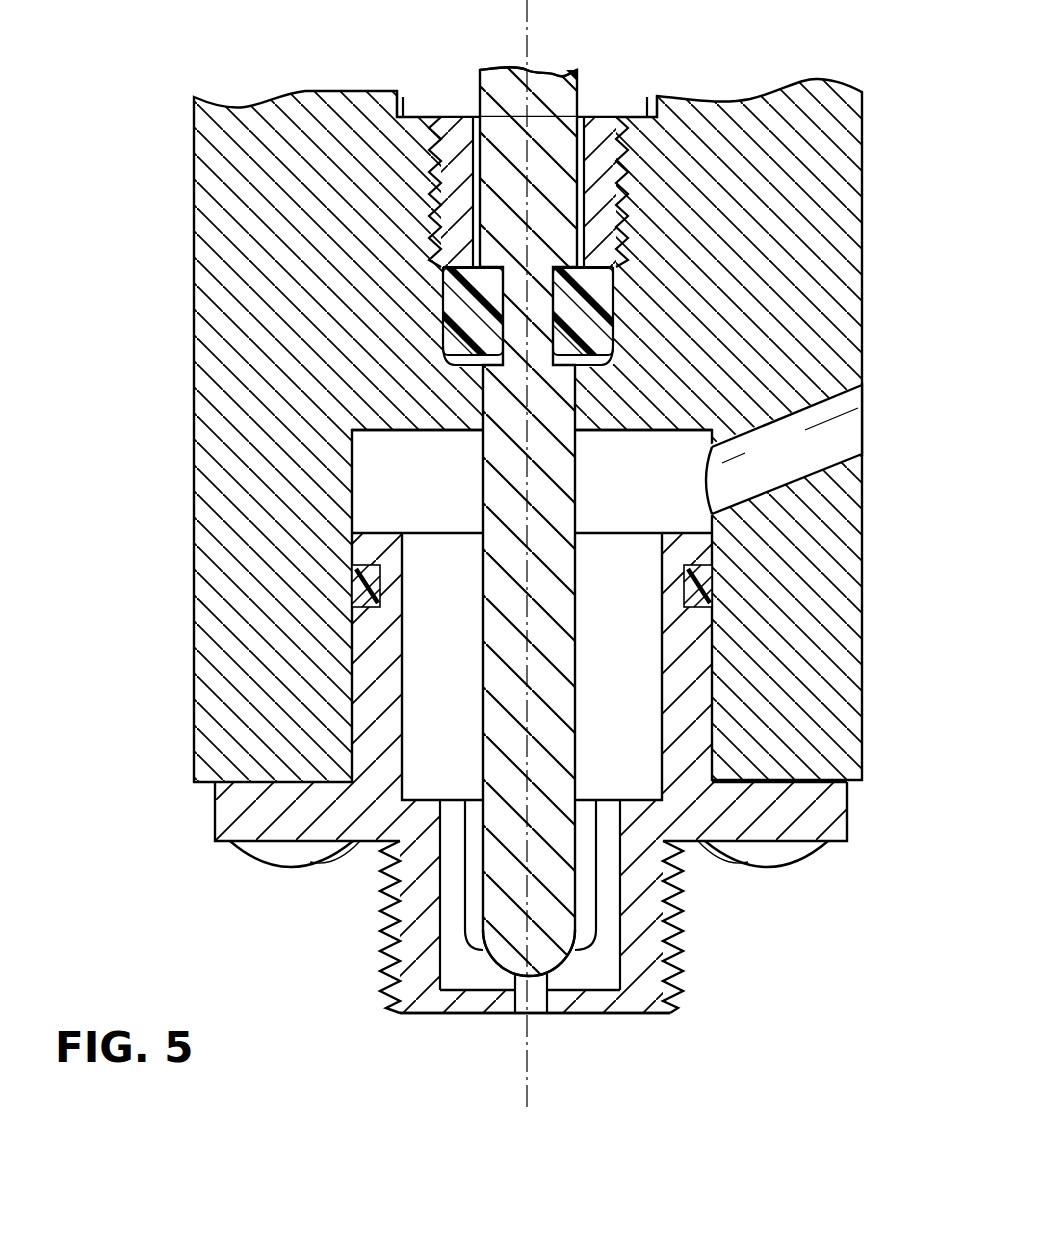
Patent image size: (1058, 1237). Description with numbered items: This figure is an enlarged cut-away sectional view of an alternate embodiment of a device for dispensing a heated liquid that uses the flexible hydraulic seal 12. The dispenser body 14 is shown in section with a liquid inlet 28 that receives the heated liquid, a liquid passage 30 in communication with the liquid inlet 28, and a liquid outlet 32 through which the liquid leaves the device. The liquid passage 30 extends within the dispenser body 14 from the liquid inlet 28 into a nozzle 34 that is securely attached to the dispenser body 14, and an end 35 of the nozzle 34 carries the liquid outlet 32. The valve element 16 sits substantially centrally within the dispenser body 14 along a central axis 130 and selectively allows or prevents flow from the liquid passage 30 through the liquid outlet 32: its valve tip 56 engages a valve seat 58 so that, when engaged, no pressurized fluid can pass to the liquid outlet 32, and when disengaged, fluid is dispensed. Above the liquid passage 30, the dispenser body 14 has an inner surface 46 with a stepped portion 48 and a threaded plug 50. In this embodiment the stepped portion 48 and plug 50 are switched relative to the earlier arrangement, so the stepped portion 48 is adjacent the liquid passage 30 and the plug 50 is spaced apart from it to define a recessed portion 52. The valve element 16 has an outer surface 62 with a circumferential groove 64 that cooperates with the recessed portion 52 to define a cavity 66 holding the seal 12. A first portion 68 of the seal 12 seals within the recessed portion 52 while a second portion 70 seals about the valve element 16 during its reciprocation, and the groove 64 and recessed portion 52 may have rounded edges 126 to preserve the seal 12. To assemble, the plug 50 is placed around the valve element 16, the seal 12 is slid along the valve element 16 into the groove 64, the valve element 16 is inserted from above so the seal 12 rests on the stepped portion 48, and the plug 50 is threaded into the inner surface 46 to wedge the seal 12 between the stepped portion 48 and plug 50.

The flexible seal 12 is at (608, 286).
The dispenser body 14 is at (863, 199).
The valve element 16 is at (576, 593).
The liquid inlet 28 is at (804, 470).
The liquid passage 30 is at (442, 497).
The liquid outlet 32 is at (535, 1007).
The nozzle 34 is at (383, 901).
The end of the nozzle 35 is at (463, 1015).
The inner surface 46 is at (417, 91).
The stepped portion 48 is at (443, 373).
The plug 50 is at (607, 194).
The recessed portion 52 is at (620, 370).
The valve tip 56 is at (545, 956).
The valve seat 58 is at (483, 930).
The outer surface 62 is at (603, 117).
The circumferential groove 64 is at (610, 327).
The cavity 66 is at (597, 273).
The first portion 68 is at (455, 284).
The second portion 70 is at (490, 276).
The rounded edges 126 is at (452, 340).
The central axis 130 is at (533, 18).